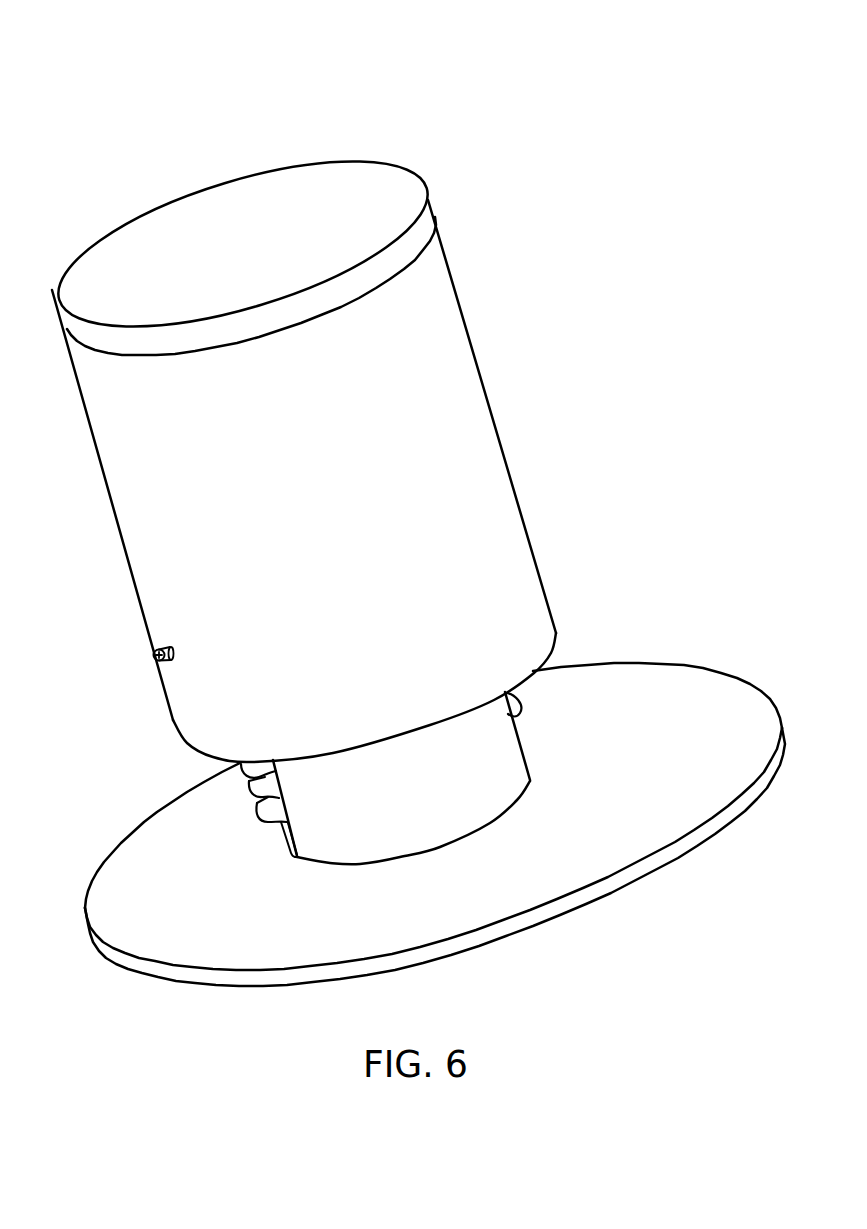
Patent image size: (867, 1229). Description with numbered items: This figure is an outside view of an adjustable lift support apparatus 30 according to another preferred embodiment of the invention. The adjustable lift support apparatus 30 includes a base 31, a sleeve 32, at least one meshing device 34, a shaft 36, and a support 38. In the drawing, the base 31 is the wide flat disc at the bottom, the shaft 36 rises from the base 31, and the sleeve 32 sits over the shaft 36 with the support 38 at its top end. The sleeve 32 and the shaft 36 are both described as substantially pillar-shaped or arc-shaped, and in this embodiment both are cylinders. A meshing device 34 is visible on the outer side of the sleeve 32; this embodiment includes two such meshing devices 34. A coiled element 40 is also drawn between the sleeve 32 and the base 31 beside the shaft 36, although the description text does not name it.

The adjustable lift support apparatus 30 is at (372, 82).
The base 31 is at (631, 661).
The sleeve 32 is at (479, 362).
The meshing device 34 is at (152, 654).
The shaft 36 is at (530, 778).
The support 38 is at (230, 227).
The spring 40 is at (247, 795).